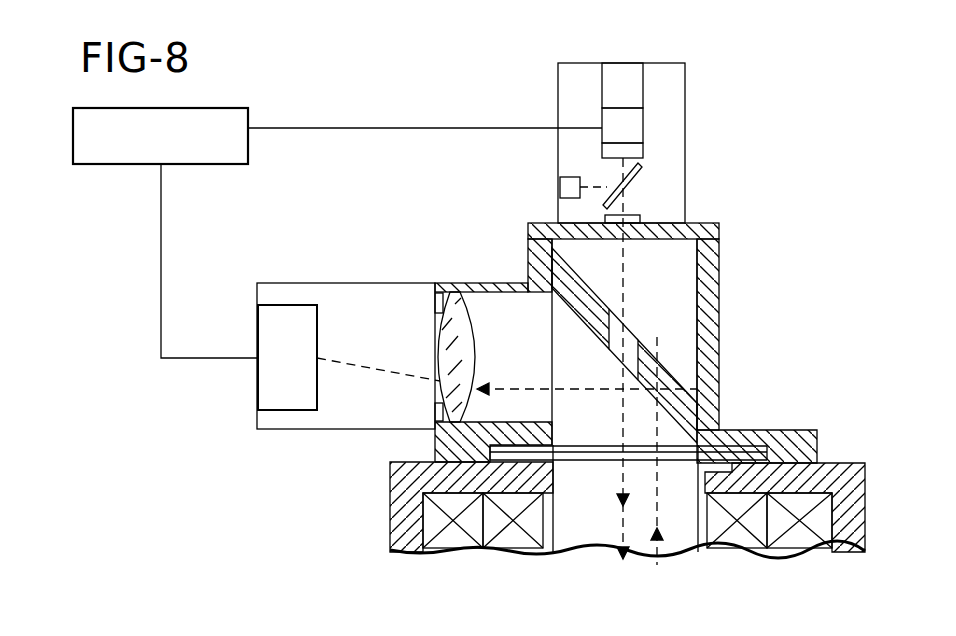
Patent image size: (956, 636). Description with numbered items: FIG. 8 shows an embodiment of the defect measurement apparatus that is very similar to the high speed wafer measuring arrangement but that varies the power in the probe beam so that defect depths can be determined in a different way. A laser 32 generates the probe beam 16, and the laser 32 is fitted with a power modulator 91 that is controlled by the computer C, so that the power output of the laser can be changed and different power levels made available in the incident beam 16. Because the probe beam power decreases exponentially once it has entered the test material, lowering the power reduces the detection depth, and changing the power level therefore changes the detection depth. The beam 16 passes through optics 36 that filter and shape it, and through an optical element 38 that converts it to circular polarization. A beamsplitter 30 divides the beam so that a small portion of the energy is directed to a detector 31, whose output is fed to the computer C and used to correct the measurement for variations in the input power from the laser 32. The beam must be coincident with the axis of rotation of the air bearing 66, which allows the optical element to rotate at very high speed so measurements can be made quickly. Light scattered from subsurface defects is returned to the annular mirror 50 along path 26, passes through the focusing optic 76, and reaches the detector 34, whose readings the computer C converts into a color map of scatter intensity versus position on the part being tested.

The computer C is at (73, 128).
The laser 32 is at (643, 88).
The power modulator 91 is at (643, 122).
The spatial filter/beam expander 36 is at (643, 148).
The detector 31 is at (560, 182).
The beamsplitter 30 is at (642, 182).
The optical element 38 is at (640, 213).
The probe beam 16 is at (626, 268).
The annular mirror 50 is at (636, 336).
The path 26 is at (578, 390).
The detector 34 is at (317, 320).
The focusing optic 76 is at (465, 326).
The air bearing 66 is at (738, 547).